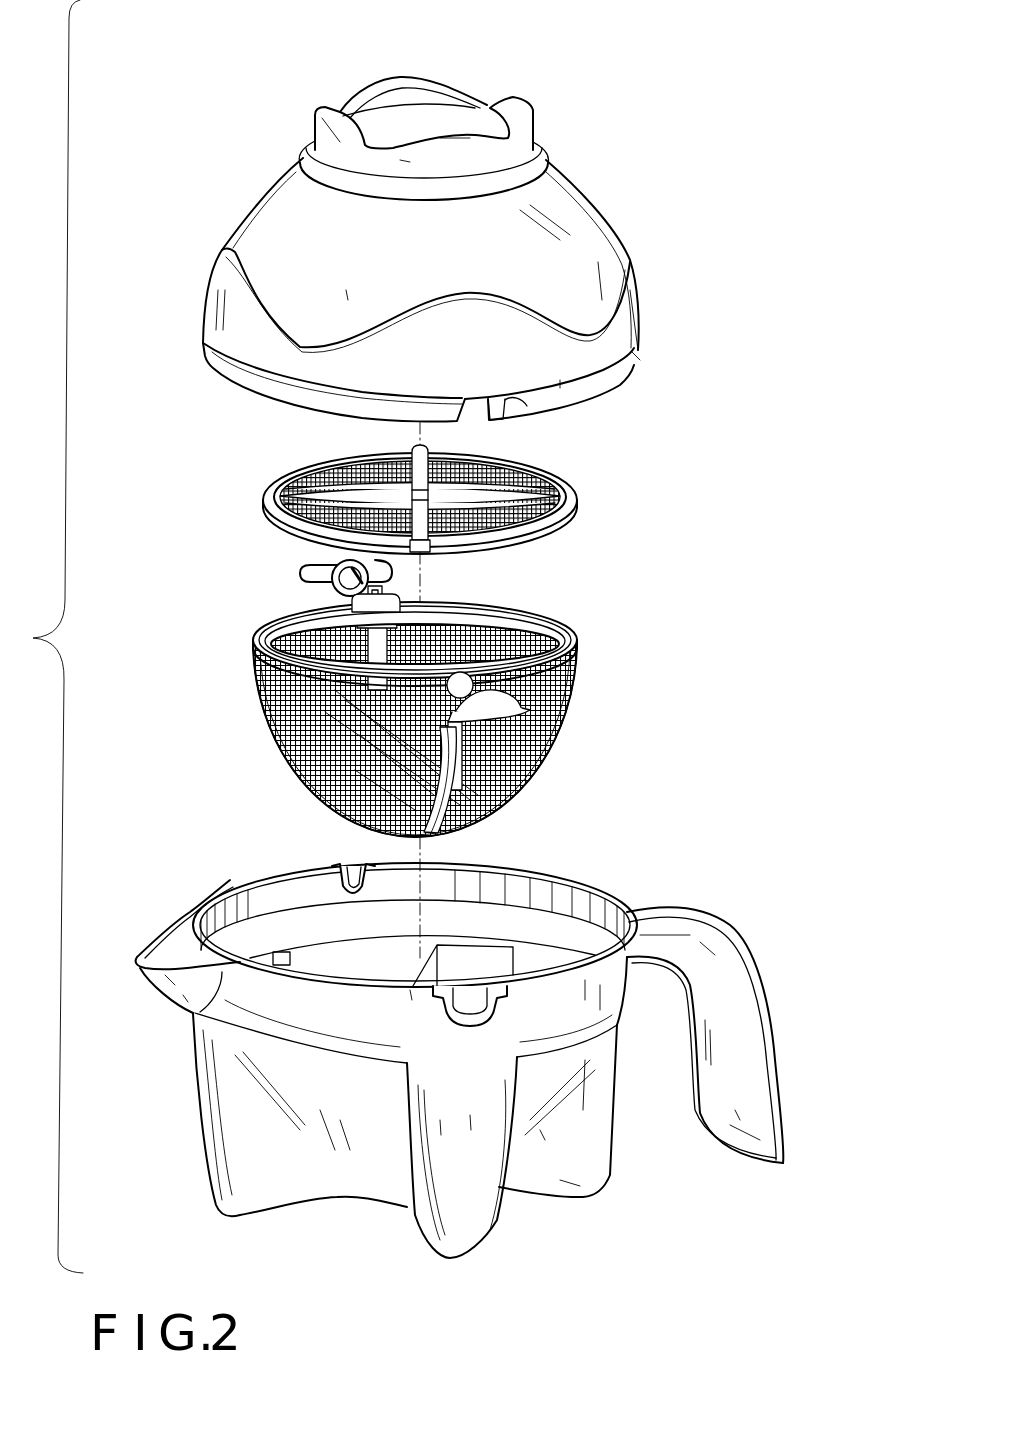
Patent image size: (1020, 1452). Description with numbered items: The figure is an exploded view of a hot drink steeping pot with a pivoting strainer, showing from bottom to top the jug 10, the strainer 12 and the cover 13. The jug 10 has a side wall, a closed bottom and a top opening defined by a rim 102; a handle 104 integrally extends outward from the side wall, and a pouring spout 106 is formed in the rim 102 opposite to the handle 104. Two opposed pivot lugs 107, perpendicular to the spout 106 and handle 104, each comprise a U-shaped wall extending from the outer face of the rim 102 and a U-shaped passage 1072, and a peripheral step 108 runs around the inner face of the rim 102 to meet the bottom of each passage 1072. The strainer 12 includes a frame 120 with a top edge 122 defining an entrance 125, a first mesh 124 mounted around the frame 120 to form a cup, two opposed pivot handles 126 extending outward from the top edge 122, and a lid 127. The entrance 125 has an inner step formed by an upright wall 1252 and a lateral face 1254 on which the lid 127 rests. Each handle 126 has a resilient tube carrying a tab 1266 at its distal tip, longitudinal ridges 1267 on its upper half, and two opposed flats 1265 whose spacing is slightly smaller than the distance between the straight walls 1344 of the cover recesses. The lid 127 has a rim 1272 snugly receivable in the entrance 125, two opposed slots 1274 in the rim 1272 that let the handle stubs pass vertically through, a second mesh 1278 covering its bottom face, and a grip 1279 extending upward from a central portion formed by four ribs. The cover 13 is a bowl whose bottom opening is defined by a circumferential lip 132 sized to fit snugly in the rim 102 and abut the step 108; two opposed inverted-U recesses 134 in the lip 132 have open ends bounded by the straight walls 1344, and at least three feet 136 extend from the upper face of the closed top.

The jug 10 is at (612, 880).
The rim 102 is at (222, 893).
The handle 104 is at (743, 950).
The pouring spout 106 is at (146, 948).
The pivot lug 107 is at (443, 1014).
The U-shaped passage 1072 is at (465, 1008).
The peripheral step 108 is at (538, 895).
The strainer 12 is at (580, 742).
The frame 120 is at (580, 624).
The top edge 122 is at (254, 642).
The first mesh 124 is at (273, 722).
The entrance 125 is at (298, 628).
The upright wall 1252 is at (503, 606).
The lateral face 1254 is at (540, 624).
The pivot handle 126 is at (530, 707).
The flat 1265 is at (381, 822).
The tab 1266 is at (300, 576).
The longitudinal ridges 1267 is at (386, 583).
The lid 127 is at (612, 486).
The rim 1272 is at (266, 500).
The slot 1274 is at (427, 548).
The second mesh 1278 is at (305, 528).
The grip 1279 is at (405, 453).
The cover 13 is at (612, 240).
The circumferential lip 132 is at (622, 380).
The recess 134 is at (493, 414).
The straight wall 1344 is at (505, 403).
The foot 136 is at (520, 99).